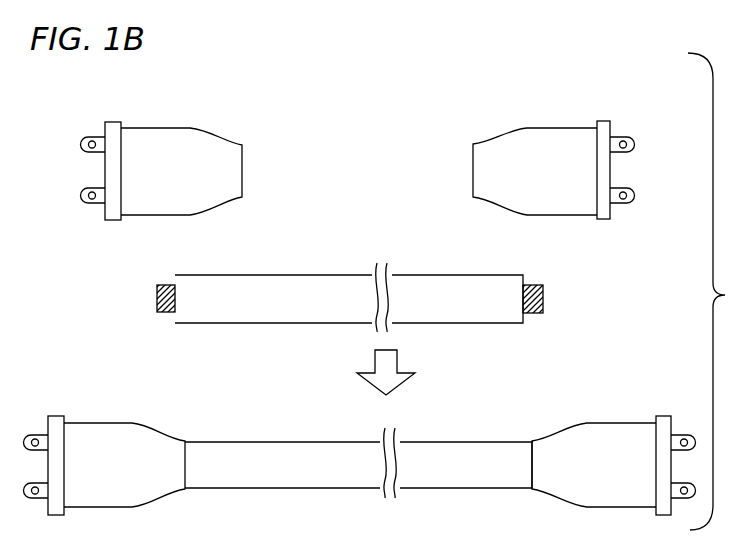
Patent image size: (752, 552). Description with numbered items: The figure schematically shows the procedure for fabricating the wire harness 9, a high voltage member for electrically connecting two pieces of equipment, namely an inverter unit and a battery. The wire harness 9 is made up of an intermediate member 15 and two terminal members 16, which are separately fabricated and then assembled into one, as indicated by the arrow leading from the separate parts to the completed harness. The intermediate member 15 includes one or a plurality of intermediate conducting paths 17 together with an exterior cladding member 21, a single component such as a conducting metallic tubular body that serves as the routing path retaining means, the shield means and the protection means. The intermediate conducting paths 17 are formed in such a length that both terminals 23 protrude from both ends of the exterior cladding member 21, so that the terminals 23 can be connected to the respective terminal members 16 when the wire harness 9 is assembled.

The wire harness 9 is at (239, 410).
The intermediate member 15 is at (364, 354).
The terminal member 16 is at (178, 125).
The intermediate conducting path 17 is at (546, 295).
The exterior cladding member 21 is at (466, 310).
The terminal 23 is at (364, 366).